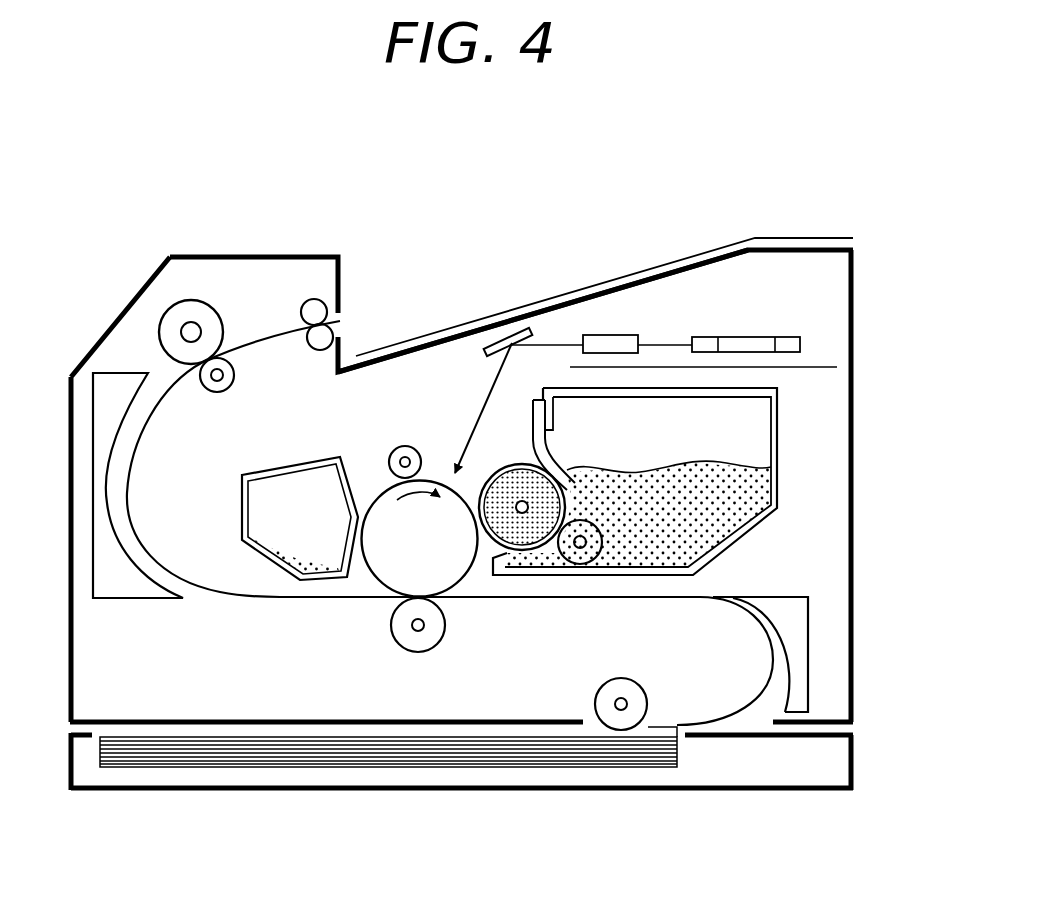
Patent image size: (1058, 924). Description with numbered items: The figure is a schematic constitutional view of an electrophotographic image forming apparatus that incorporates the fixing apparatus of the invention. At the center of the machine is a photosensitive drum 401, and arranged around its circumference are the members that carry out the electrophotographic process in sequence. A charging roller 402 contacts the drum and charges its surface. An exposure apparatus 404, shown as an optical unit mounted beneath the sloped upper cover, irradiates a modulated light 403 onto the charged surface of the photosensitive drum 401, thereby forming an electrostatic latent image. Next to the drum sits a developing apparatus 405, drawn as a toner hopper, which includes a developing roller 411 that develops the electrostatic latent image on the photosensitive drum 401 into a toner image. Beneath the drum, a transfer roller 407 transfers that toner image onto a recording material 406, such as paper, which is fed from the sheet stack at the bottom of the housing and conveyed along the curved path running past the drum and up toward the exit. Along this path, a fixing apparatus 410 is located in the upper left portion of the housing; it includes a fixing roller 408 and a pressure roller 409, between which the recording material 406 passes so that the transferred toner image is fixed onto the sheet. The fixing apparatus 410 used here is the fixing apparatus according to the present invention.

The photosensitive drum 401 is at (390, 580).
The charging roller 402 is at (390, 455).
The modulated light 403 is at (477, 415).
The exposure apparatus 404 is at (756, 328).
The developing apparatus 405 is at (790, 433).
The recording material 406 is at (293, 600).
The transfer roller 407 is at (436, 636).
The fixing roller 408 is at (188, 303).
The pressure roller 409 is at (218, 360).
The fixing apparatus 410 is at (175, 188).
The developing roller 411 is at (533, 530).